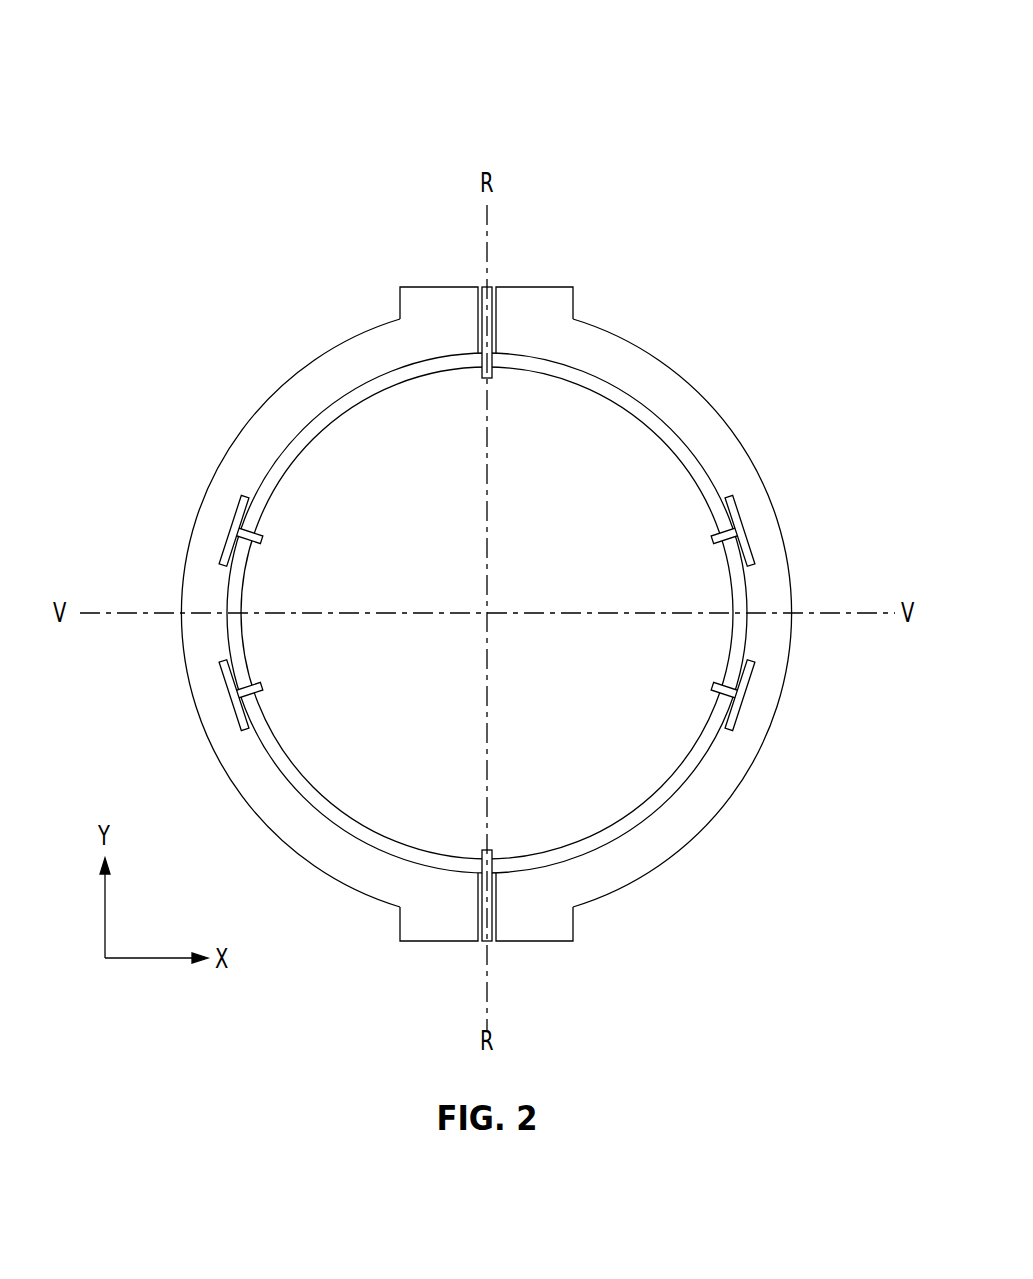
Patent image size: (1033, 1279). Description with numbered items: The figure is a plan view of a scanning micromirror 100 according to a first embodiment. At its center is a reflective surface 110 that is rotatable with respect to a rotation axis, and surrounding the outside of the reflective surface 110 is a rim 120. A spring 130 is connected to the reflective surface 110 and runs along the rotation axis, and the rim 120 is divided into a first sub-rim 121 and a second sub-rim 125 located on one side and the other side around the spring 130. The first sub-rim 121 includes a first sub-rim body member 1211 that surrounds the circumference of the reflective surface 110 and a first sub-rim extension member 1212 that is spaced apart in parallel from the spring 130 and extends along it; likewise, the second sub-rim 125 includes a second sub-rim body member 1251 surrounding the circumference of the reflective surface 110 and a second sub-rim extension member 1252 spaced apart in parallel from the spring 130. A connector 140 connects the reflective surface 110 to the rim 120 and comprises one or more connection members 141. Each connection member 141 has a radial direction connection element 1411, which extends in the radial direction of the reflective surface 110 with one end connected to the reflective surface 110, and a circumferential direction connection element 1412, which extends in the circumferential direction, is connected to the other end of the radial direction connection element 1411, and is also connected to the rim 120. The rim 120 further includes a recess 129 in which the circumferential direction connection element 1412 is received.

The scanning micromirror 100 is at (505, 107).
The reflective surface 110 is at (740, 393).
The rim 120 is at (196, 6).
The first sub-rim 121 is at (258, 2).
The first sub-rim body member 1211 is at (262, 428).
The first sub-rim extension member 1212 is at (352, 942).
The second sub-rim 125 is at (258, 80).
The second sub-rim body member 1251 is at (787, 456).
The second sub-rim extension member 1252 is at (623, 942).
The recess 129 is at (150, 702).
The spring 130 is at (532, 968).
The connector 140 is at (186, 279).
The connection member 141 is at (258, 238).
The radial direction connection element 1411 is at (160, 545).
The circumferential direction connection element 1412 is at (242, 510).